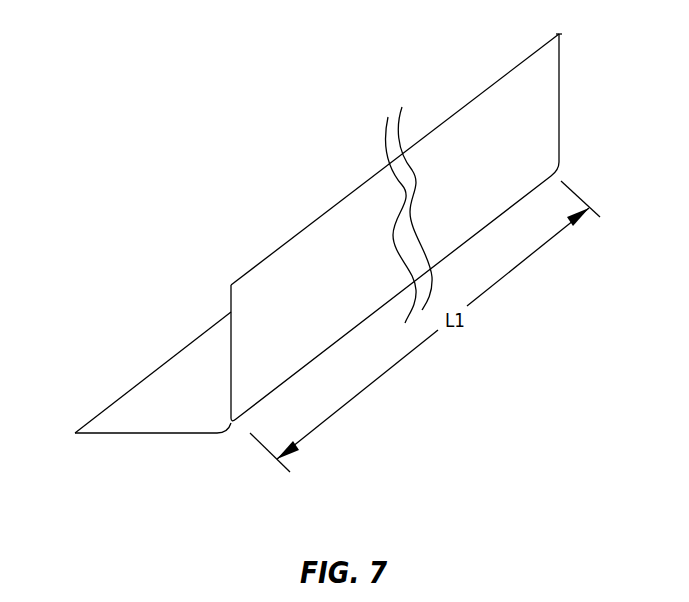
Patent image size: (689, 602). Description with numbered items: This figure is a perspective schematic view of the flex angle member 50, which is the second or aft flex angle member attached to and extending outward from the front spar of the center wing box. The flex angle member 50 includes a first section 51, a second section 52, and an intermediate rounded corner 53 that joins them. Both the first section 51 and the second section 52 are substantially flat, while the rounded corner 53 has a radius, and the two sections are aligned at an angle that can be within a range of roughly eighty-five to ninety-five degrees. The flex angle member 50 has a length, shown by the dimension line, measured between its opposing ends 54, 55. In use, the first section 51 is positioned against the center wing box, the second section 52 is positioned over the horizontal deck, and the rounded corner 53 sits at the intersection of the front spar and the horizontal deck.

The flex angle member 50 is at (360, 260).
The first section 51 is at (537, 120).
The second section 52 is at (172, 387).
The rounded corner 53 is at (232, 428).
The end 54 is at (138, 433).
The end 55 is at (562, 65).